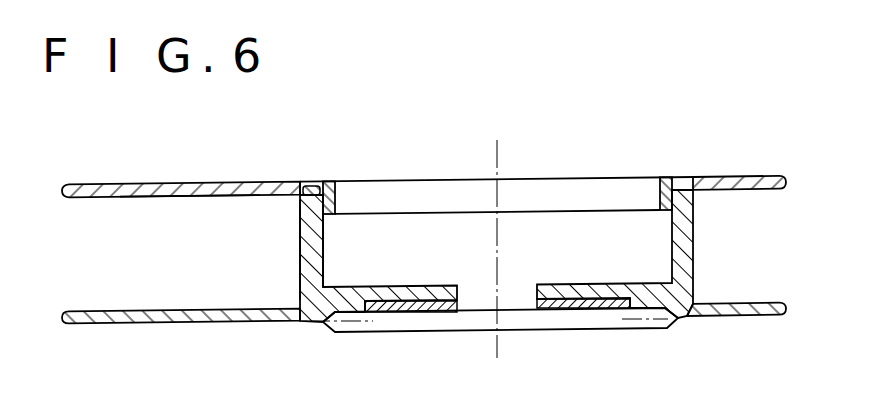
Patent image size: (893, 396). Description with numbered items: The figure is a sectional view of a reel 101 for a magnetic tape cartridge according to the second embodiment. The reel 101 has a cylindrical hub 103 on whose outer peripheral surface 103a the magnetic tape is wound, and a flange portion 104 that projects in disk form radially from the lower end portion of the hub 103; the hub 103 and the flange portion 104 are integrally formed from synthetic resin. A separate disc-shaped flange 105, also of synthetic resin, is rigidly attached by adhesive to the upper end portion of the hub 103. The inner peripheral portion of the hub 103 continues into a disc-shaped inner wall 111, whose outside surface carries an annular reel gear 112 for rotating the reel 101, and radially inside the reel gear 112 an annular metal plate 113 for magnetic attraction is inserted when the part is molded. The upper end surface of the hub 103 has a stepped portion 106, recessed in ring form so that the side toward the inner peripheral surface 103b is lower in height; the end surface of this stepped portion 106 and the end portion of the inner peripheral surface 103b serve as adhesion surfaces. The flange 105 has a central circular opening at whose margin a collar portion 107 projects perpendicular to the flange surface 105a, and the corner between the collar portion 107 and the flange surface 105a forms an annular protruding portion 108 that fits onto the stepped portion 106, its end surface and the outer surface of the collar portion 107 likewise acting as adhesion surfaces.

The reel 101 is at (248, 128).
The cylindrical hub 103 is at (310, 275).
The outer peripheral surface 103a is at (300, 243).
The inner peripheral surface 103b is at (323, 238).
The flange portion 104 is at (147, 311).
The flange 105 is at (133, 183).
The flange surface 105a is at (182, 197).
The stepped portion 106 is at (302, 196).
The collar portion 107 is at (330, 203).
The annular protruding portion 108 is at (313, 181).
The inner wall 111 is at (436, 287).
The reel gear 112 is at (658, 322).
The metal plate 113 is at (577, 311).